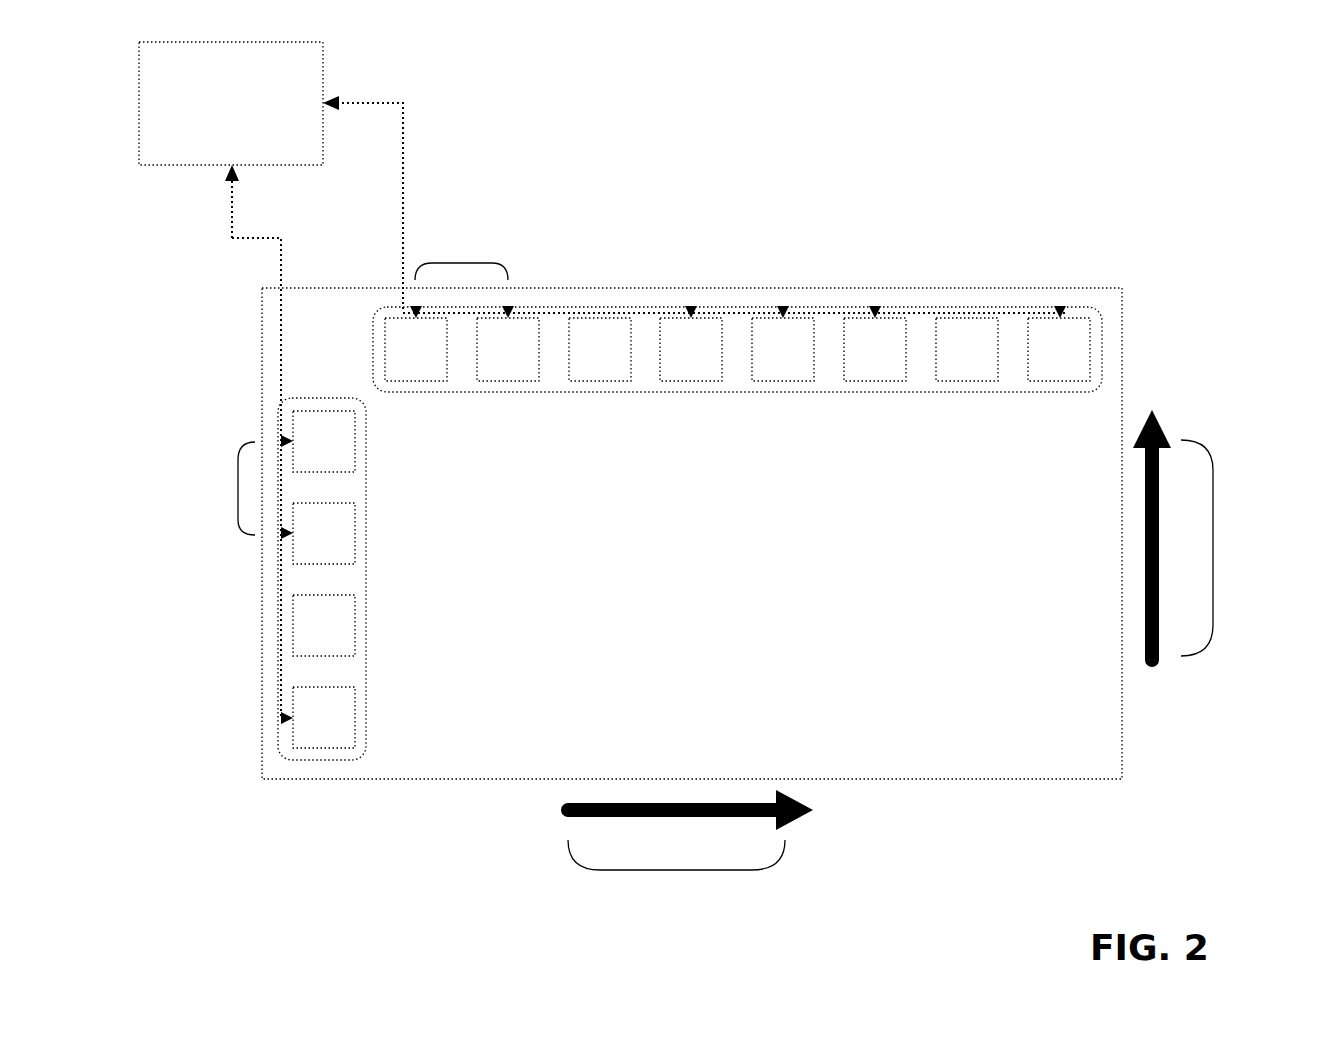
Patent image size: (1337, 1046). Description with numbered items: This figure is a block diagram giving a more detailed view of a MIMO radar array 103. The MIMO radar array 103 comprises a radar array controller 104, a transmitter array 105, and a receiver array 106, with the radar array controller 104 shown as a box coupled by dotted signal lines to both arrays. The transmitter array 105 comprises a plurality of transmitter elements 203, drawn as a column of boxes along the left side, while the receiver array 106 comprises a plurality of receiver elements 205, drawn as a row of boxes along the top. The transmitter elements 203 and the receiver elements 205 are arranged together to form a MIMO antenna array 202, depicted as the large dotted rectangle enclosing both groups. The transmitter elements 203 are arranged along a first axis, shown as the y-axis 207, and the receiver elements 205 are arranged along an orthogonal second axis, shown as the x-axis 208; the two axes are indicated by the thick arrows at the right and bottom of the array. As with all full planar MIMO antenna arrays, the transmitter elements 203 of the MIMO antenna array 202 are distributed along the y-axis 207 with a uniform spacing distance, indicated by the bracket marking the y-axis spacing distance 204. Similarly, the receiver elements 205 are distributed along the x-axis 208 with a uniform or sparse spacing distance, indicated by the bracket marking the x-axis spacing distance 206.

The MIMO radar array 103 is at (1098, 61).
The radar array controller 104 is at (271, 176).
The transmitter array 105 is at (281, 578).
The receiver array 106 is at (737, 308).
The MIMO antenna array 202 is at (997, 288).
The transmitter elements 203 is at (324, 579).
The y-axis spacing distance 204 is at (238, 487).
The receiver elements 205 is at (737, 349).
The x-axis spacing distance 206 is at (462, 263).
The y-axis 207 is at (1213, 550).
The x-axis 208 is at (677, 870).